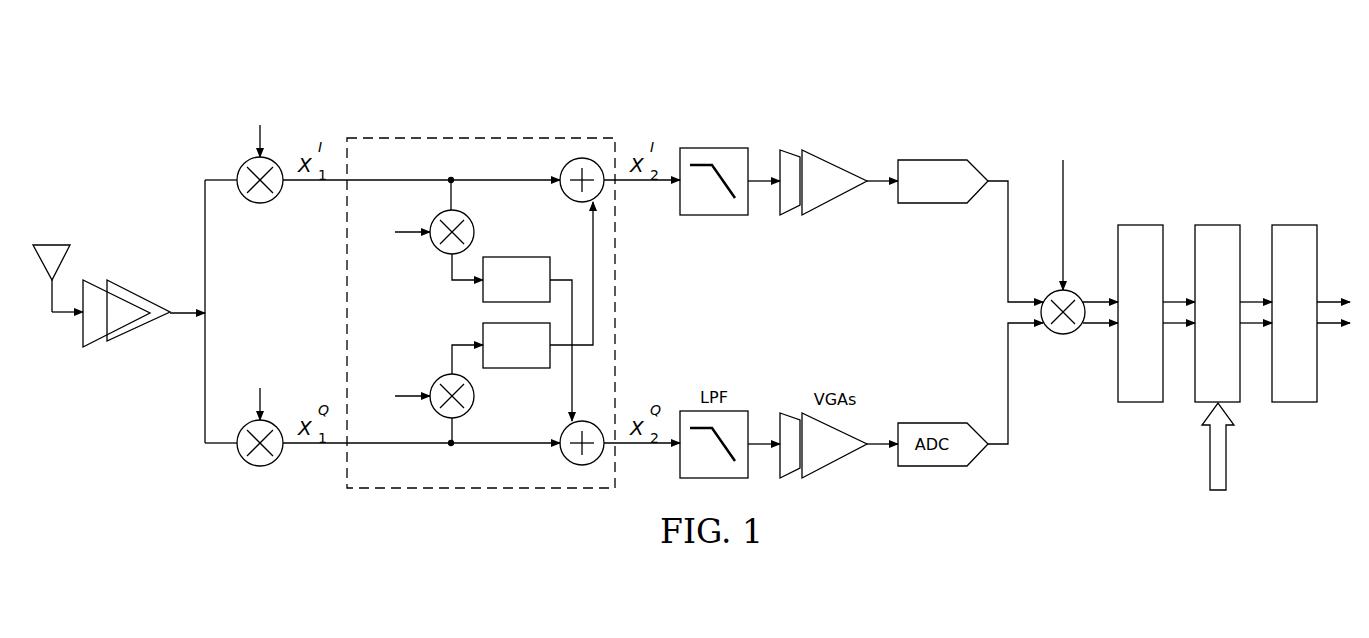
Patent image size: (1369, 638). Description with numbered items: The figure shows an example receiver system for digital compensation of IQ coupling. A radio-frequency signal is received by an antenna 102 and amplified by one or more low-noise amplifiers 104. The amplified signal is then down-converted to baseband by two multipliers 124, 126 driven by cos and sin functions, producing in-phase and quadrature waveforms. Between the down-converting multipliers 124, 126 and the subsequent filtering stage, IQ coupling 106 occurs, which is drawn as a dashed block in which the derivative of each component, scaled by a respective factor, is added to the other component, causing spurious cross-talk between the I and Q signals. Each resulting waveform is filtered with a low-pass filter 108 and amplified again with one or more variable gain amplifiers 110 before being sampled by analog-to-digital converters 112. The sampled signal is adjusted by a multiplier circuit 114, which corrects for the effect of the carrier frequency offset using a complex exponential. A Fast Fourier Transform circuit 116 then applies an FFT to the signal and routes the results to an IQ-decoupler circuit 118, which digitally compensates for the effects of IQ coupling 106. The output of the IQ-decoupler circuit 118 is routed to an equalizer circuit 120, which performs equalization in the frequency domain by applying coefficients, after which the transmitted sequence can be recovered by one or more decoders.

The antenna 102 is at (62, 245).
The low-noise amplifiers 104 is at (143, 333).
The IQ coupling 106 is at (345, 300).
The low-pass filter 108 is at (712, 215).
The variable gain amplifiers 110 is at (838, 200).
The analog-to-digital converters 112 is at (933, 160).
The multiplier circuit 114 is at (1070, 332).
The Fast Fourier Transform circuit 116 is at (1140, 225).
The IQ-decoupler circuit 118 is at (1228, 225).
The equalizer circuit 120 is at (1293, 225).
The in-phase mixer 124 is at (250, 203).
The quadrature mixer 126 is at (250, 465).